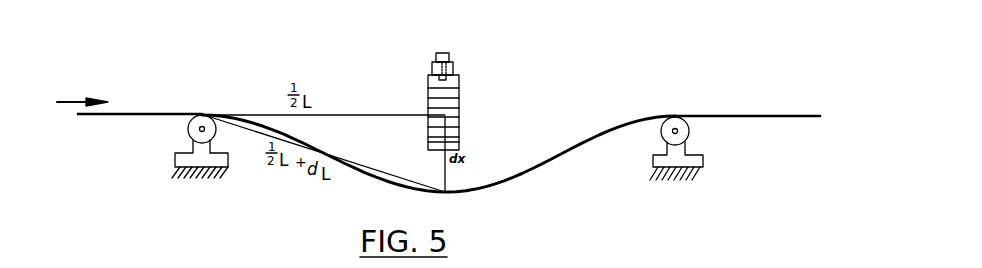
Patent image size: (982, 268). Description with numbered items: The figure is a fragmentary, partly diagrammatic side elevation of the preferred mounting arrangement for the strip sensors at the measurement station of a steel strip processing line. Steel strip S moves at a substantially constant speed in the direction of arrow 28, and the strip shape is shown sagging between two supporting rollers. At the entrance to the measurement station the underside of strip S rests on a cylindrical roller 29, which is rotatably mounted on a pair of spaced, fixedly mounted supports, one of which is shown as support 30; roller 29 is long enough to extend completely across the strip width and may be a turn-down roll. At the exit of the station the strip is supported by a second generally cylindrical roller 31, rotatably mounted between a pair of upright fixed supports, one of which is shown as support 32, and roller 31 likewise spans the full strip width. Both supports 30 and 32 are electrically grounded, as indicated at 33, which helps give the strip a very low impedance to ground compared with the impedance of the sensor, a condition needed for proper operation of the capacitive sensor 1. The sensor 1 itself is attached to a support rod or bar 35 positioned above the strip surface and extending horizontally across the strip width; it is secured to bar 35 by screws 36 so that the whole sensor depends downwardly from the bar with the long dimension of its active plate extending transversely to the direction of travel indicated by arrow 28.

The sensor 1 is at (473, 120).
The steel strip S is at (132, 113).
The arrow 28 is at (73, 102).
The cylindrical roller 29 is at (191, 134).
The fixedly mounted support 30 is at (174, 162).
The second cylindrical roller 31 is at (690, 133).
The upright fixed support 32 is at (699, 160).
The electrical ground 33 is at (218, 172).
The support rod or bar 35 is at (430, 63).
The screws 36 is at (448, 53).